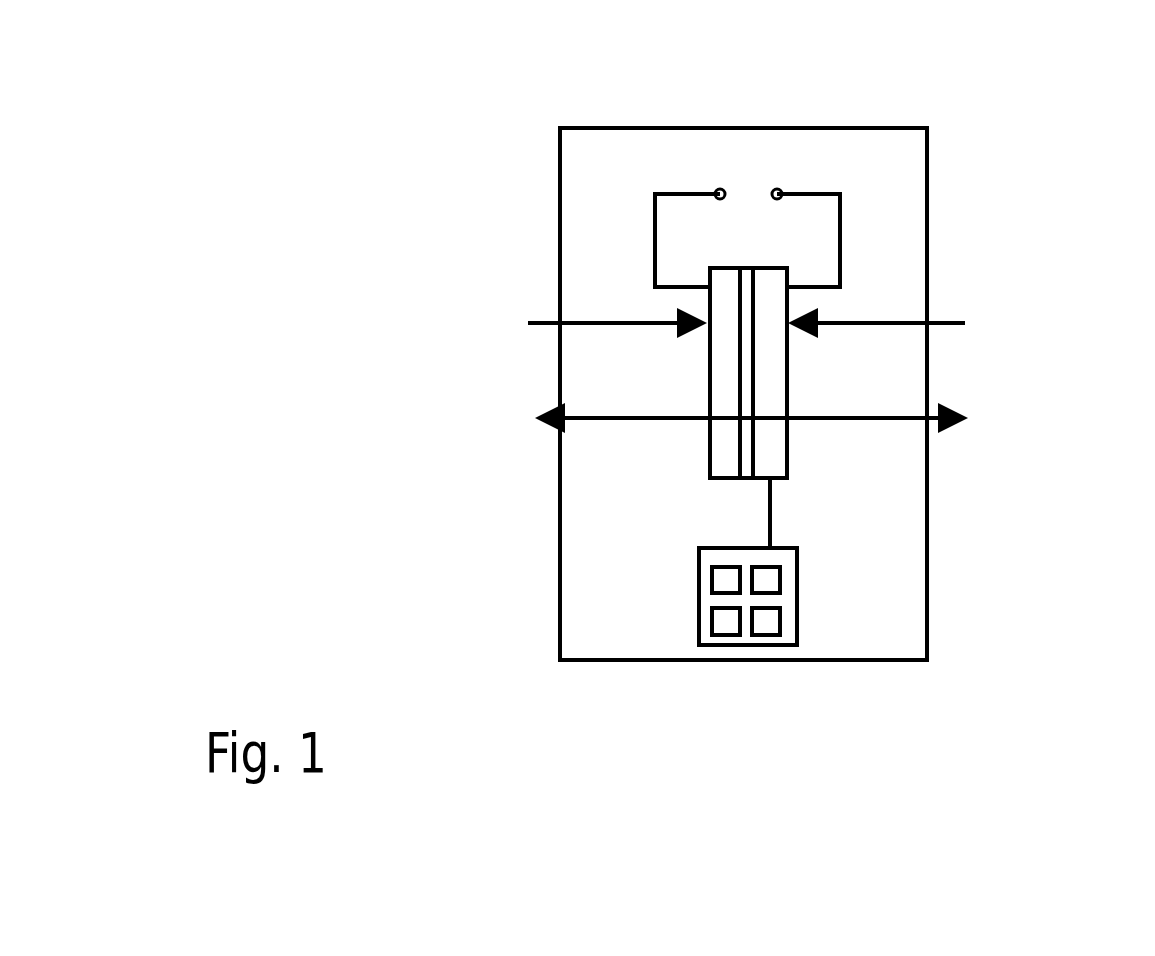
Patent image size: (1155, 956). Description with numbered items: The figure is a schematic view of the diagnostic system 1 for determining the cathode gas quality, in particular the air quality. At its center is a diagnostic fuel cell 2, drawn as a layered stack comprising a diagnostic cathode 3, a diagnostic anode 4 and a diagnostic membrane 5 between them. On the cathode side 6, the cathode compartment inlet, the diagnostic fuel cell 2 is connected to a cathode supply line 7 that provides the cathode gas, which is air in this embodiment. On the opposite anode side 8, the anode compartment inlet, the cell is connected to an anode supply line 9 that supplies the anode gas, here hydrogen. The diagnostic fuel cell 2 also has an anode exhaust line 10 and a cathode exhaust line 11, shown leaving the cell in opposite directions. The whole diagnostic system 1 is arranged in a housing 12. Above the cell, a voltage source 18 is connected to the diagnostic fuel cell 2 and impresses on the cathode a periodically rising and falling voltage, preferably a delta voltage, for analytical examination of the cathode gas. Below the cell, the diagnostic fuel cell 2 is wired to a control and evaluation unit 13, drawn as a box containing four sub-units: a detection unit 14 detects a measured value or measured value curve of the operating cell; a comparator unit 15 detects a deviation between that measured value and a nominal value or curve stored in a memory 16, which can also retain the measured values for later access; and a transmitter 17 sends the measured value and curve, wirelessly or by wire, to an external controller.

The diagnostic system 1 is at (1033, 156).
The diagnostic fuel cell 2 is at (706, 321).
The diagnostic cathode 3 is at (778, 442).
The diagnostic anode 4 is at (722, 473).
The diagnostic membrane 5 is at (743, 448).
The cathode side 6 is at (787, 377).
The cathode supply line 7 is at (953, 319).
The anode side 8 is at (710, 378).
The anode supply line 9 is at (575, 323).
The anode exhaust line 10 is at (577, 418).
The cathode exhaust line 11 is at (903, 418).
The housing 12 is at (927, 558).
The control and evaluation unit 13 is at (726, 646).
The detection unit 14 is at (727, 580).
The comparator unit 15 is at (770, 580).
The memory 16 is at (722, 622).
The transmitter 17 is at (768, 623).
The voltage source 18 is at (840, 208).